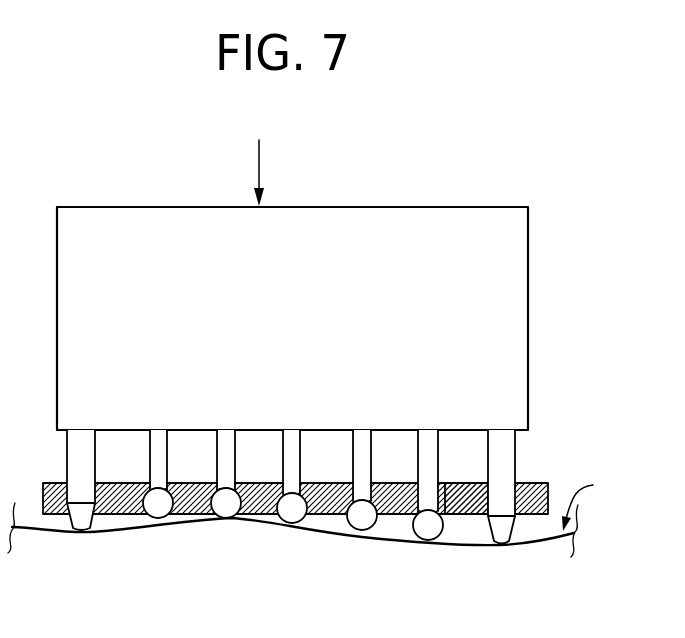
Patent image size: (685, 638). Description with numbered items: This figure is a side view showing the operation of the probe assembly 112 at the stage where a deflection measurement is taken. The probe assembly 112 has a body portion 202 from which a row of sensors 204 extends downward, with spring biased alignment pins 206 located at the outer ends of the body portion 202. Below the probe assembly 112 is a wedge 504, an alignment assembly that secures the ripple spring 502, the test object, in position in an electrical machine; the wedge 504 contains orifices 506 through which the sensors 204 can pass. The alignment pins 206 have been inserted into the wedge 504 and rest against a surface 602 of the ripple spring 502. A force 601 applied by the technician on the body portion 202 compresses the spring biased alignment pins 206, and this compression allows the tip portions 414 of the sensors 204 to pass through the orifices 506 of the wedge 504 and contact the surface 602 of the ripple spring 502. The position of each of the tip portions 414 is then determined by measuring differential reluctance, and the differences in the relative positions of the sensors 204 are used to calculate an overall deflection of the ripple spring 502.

The probe assembly 112 is at (530, 172).
The body portion 202 is at (515, 293).
The sensors 204 is at (223, 452).
The alignment pins 206 is at (72, 455).
The tip portions 414 is at (223, 510).
The ripple spring 502 is at (534, 547).
The wedge 504 is at (543, 485).
The orifices 506 is at (442, 505).
The force 601 is at (259, 163).
The surface 602 is at (597, 499).